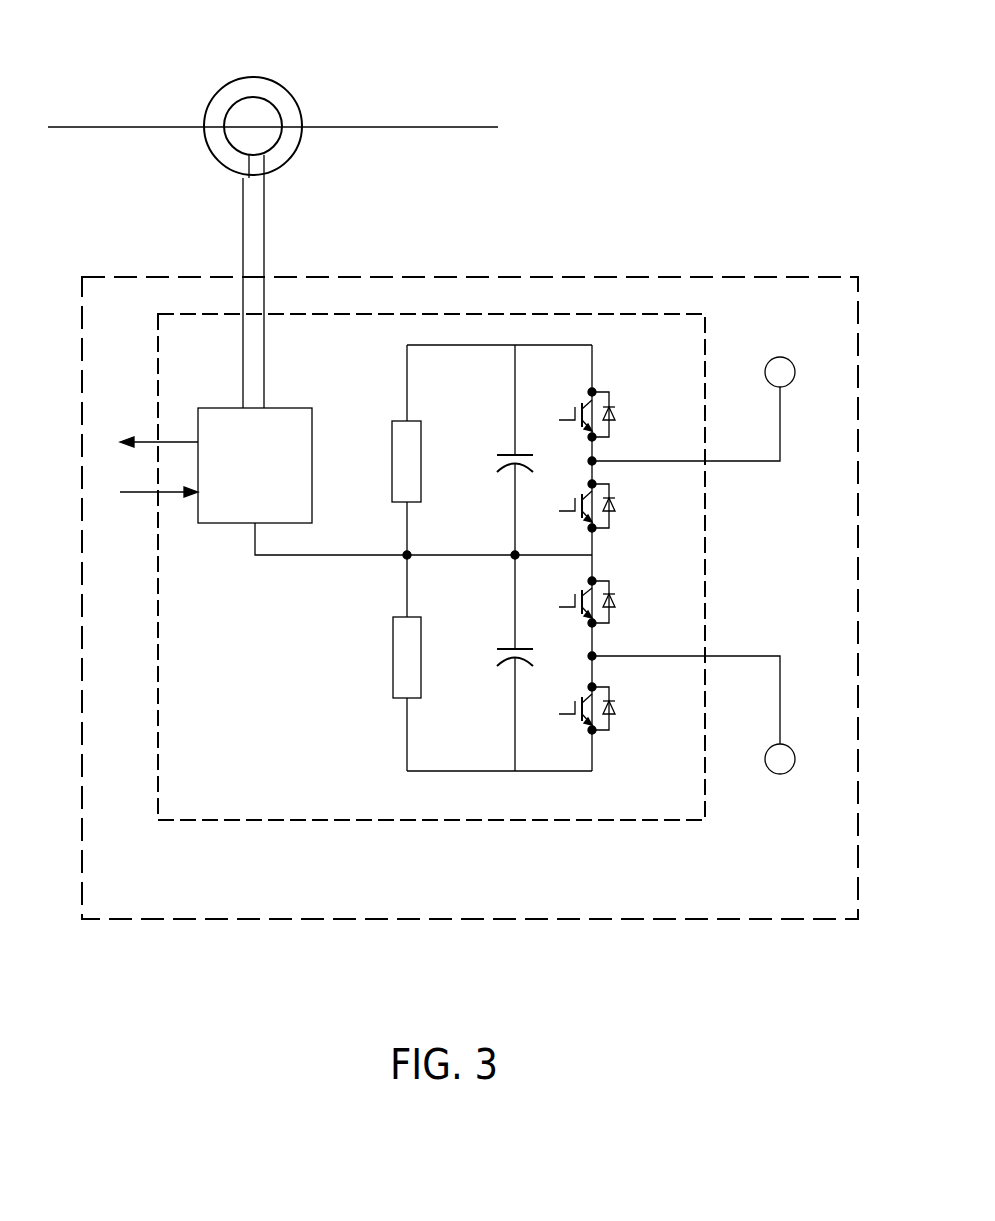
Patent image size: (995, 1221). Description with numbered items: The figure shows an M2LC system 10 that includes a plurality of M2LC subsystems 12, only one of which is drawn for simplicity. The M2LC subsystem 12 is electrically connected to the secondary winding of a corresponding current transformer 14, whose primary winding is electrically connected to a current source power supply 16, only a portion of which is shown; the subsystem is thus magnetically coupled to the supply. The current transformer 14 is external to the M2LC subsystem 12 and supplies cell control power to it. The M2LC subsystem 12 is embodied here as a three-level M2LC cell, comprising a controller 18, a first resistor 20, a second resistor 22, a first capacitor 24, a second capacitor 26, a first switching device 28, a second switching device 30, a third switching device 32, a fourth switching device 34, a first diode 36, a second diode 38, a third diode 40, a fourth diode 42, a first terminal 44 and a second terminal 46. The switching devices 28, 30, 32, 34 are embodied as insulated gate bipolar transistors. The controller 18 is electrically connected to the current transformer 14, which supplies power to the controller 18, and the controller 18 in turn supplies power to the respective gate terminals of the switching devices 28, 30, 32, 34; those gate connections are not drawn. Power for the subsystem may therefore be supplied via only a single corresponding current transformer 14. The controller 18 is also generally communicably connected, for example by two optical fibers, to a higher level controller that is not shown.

The M2LC system 10 is at (773, 277).
The M2LC subsystem 12 is at (445, 314).
The current transformer 14 is at (253, 77).
The current source power supply 16 is at (78, 127).
The controller 18 is at (263, 483).
The first resistor 20 is at (405, 457).
The second resistor 22 is at (405, 655).
The first capacitor 24 is at (497, 467).
The second capacitor 26 is at (497, 662).
The first switching device 28 is at (577, 405).
The second switching device 30 is at (577, 496).
The third switching device 32 is at (577, 617).
The fourth switching device 34 is at (578, 723).
The first diode 36 is at (616, 412).
The second diode 38 is at (616, 504).
The third diode 40 is at (616, 600).
The fourth diode 42 is at (616, 706).
The first terminal 44 is at (780, 357).
The second terminal 46 is at (780, 774).